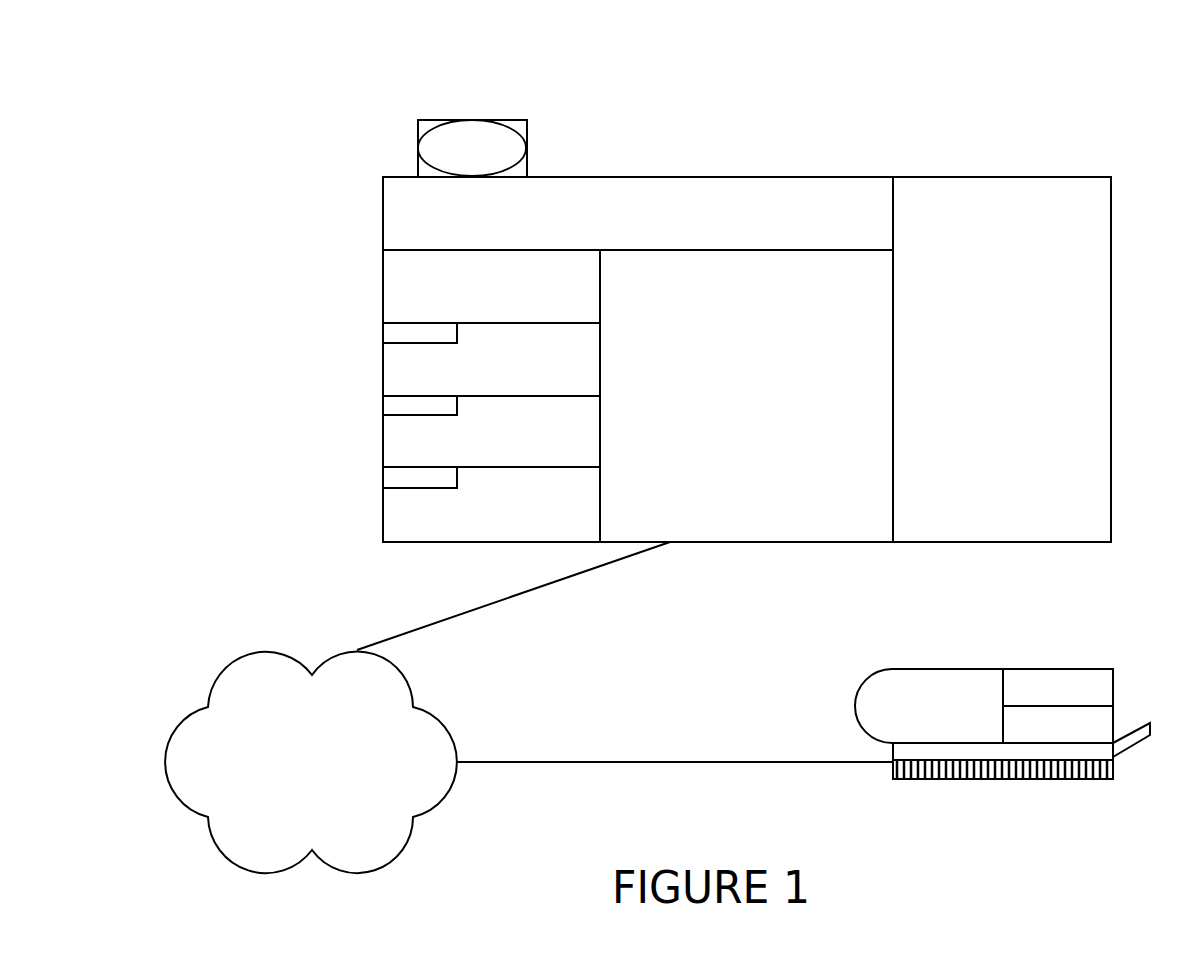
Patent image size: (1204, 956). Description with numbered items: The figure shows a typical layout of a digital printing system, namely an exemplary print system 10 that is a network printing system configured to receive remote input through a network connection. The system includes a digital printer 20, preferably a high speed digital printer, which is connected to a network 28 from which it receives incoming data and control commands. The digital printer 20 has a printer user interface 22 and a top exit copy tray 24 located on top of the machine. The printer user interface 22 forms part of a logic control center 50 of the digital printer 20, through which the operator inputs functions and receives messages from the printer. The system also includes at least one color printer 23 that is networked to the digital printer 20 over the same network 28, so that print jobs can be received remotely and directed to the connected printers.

The print system 10 is at (1020, 102).
The digital printer 20 is at (1095, 176).
The printer user interface 22 is at (490, 140).
The top exit copy tray 24 is at (800, 195).
The logic control center 50 is at (418, 150).
The network 28 is at (262, 652).
The color printer 23 is at (1095, 669).